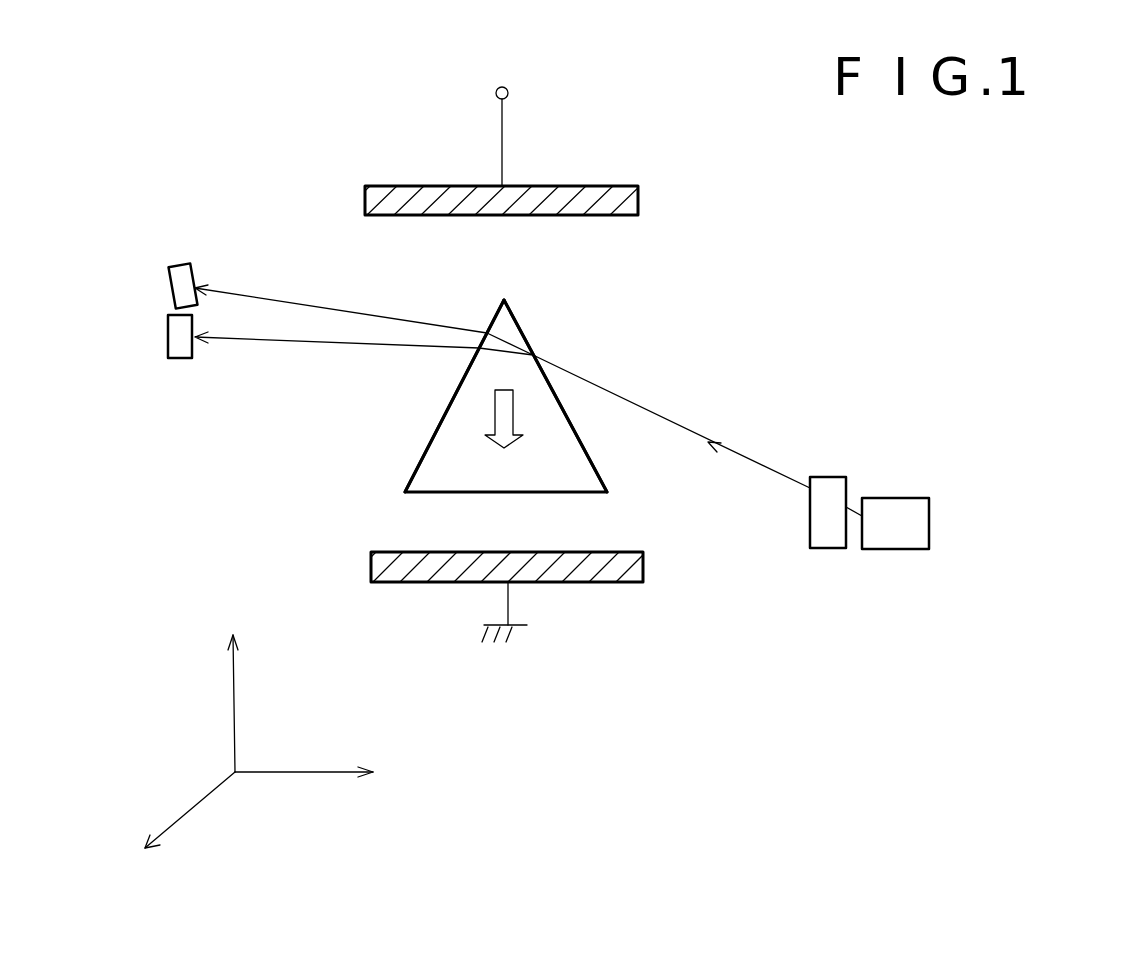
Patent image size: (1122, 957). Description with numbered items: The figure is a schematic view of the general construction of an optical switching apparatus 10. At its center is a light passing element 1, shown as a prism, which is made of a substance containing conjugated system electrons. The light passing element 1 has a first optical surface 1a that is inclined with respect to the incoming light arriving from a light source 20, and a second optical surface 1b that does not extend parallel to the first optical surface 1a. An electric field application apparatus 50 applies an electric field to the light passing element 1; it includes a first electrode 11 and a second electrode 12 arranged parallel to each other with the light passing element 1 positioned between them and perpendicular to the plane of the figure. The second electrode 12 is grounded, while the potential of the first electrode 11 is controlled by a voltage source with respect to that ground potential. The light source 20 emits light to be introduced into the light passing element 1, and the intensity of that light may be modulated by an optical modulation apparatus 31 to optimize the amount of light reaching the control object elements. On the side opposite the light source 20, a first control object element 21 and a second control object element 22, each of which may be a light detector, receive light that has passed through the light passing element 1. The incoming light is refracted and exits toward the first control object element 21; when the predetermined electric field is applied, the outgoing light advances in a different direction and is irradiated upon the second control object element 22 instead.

The light passing element 1 is at (424, 453).
The first optical surface 1a is at (529, 346).
The second optical surface 1b is at (447, 409).
The optical switching apparatus 10 is at (797, 738).
The first electrode 11 is at (622, 188).
The second electrode 12 is at (643, 583).
The light source 20 is at (895, 498).
The first control object element 21 is at (168, 337).
The second control object element 22 is at (170, 284).
The optical modulation apparatus 31 is at (829, 477).
The electric field application apparatus 50 is at (1057, 340).